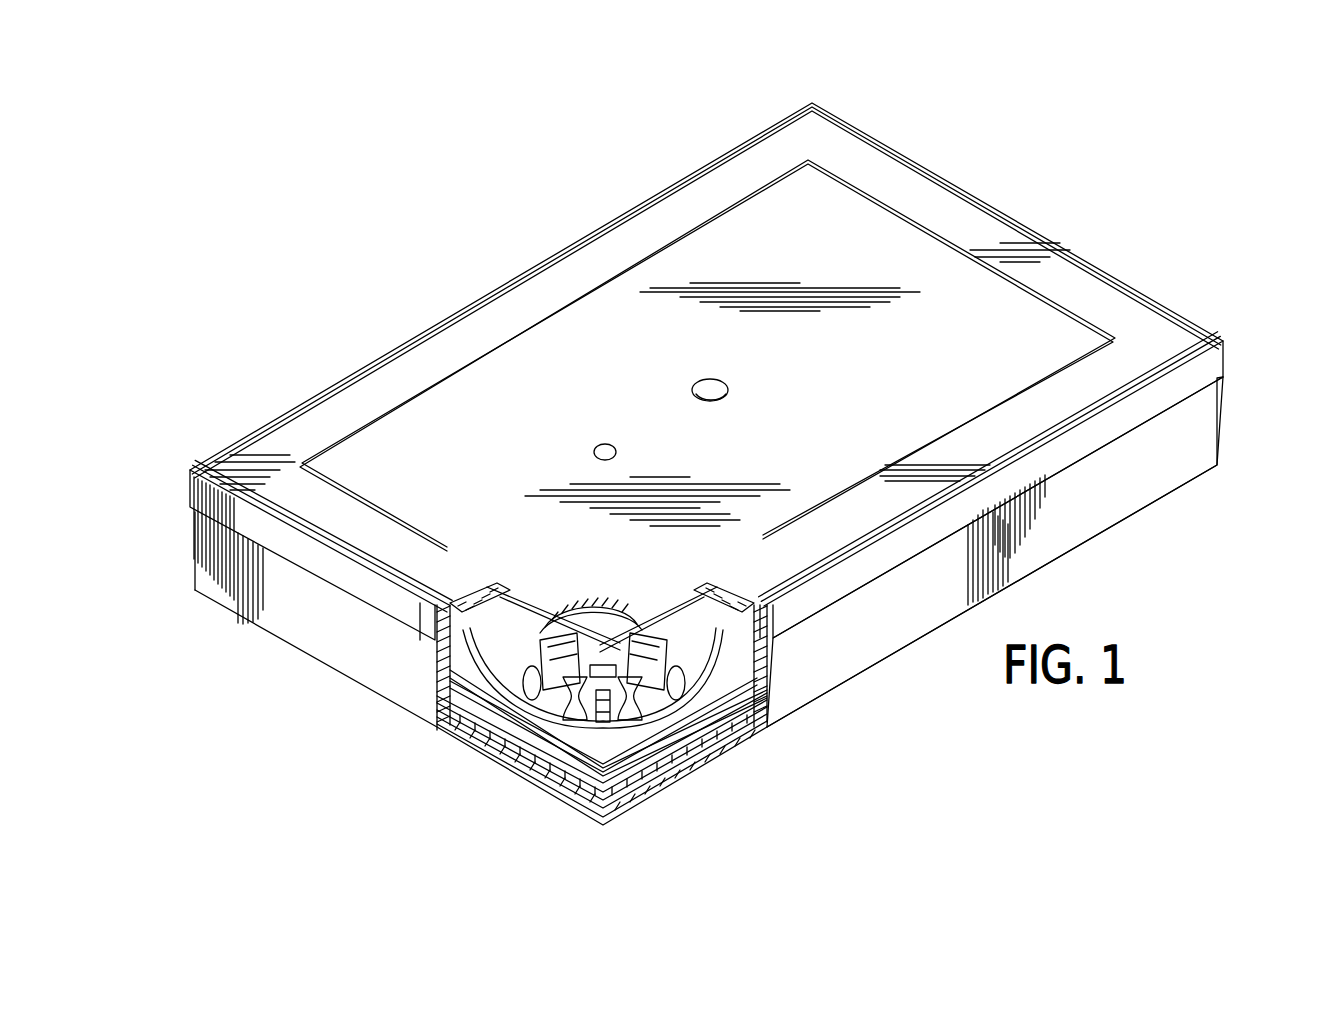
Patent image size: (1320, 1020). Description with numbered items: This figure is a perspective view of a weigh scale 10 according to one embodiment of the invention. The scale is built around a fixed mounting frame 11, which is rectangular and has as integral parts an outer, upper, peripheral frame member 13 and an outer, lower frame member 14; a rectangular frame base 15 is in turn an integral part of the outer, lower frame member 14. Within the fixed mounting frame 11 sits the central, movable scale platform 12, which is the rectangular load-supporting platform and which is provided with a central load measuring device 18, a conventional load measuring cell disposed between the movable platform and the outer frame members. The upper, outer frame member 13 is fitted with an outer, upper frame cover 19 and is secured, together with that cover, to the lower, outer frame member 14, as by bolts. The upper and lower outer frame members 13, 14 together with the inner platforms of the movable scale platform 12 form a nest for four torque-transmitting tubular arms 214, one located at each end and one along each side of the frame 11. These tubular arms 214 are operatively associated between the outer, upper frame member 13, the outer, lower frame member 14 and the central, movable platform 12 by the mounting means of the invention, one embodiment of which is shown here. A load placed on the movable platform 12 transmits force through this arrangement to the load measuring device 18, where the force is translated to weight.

The weigh scale 10 is at (928, 147).
The fixed mounting frame 11 is at (1127, 492).
The central, movable scale platform 12 is at (456, 405).
The outer, upper, peripheral frame member 13 is at (1205, 370).
The outer, lower frame member 14 is at (1182, 440).
The rectangular frame base 15 is at (293, 618).
The central load measuring device 18 is at (712, 386).
The outer, upper frame cover 19 is at (501, 312).
The torque-transmitting tubular arms 214 is at (508, 650).